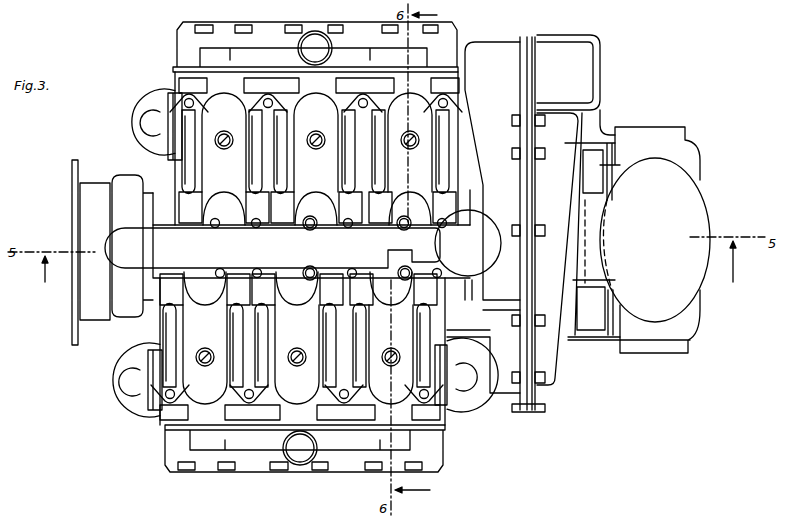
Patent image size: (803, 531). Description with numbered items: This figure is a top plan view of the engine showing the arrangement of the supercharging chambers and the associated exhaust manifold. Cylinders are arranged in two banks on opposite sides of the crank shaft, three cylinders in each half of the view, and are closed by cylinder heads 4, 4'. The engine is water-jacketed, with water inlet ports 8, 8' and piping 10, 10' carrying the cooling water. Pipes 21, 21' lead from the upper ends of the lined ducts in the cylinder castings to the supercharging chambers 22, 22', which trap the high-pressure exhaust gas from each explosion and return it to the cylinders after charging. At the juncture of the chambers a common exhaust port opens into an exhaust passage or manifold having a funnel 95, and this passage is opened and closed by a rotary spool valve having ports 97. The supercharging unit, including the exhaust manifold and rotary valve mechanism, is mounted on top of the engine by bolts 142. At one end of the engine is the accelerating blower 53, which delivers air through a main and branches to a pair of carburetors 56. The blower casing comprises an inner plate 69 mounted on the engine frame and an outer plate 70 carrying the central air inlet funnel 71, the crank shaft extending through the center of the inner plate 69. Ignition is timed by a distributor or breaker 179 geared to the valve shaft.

The cylinder head 4 is at (291, 463).
The cylinder head 4' is at (298, 47).
The water inlet port 8 is at (291, 467).
The water inlet port 8' is at (296, 48).
The piping 10 is at (300, 384).
The piping 10' is at (143, 129).
The pipe 21 is at (407, 330).
The pipe 21' is at (436, 162).
The supercharging chamber 22 is at (399, 337).
The supercharging chamber 22' is at (465, 97).
The accelerating blower 53 is at (545, 405).
The carburetor 56 is at (685, 336).
The inner plate 69 is at (478, 48).
The outer plate 70 is at (560, 355).
The central air inlet funnel 71 is at (695, 215).
The funnel 95 is at (128, 257).
The port 97 is at (283, 242).
The bolt 142 is at (447, 207).
The distributor or breaker 179 is at (472, 227).